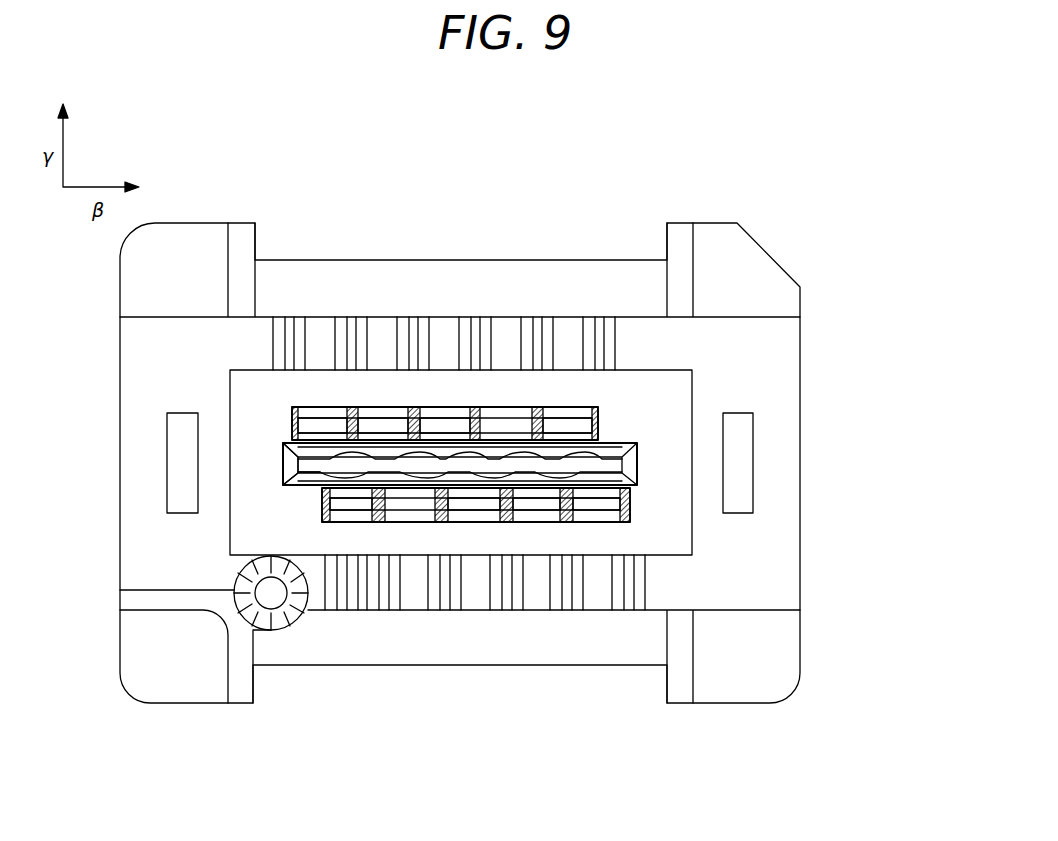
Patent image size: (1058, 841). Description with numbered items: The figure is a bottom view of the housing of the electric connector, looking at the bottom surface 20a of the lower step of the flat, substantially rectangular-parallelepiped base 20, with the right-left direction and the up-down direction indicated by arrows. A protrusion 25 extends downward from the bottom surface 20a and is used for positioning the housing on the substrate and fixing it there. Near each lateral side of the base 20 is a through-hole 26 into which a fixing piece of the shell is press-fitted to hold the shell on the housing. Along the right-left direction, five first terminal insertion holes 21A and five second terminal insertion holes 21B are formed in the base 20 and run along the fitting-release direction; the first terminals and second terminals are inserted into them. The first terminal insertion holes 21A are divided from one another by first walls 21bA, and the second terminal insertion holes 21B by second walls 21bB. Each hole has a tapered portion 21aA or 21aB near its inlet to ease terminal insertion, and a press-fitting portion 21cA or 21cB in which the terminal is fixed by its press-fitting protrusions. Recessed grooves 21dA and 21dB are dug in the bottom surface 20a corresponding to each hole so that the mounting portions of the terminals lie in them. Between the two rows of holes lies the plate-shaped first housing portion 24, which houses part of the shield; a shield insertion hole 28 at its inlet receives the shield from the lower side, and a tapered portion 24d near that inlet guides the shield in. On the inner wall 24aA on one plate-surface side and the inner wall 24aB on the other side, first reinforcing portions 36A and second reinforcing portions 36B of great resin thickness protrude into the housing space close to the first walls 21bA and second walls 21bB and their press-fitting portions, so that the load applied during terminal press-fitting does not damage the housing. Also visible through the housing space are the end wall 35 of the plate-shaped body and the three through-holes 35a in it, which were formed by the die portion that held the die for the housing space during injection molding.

The base 20 is at (782, 246).
The bottom surface 20a is at (777, 526).
The first terminal insertion holes 21A is at (373, 503).
The second terminal insertion holes 21B is at (583, 427).
The tapered portion 21aA is at (347, 467).
The tapered portion 21aB is at (572, 422).
The first walls 21bA is at (523, 500).
The second walls 21bB is at (398, 414).
The press-fitting portion 21cA is at (496, 500).
The press-fitting portion 21cB is at (308, 424).
The recessed groove 21dA is at (430, 556).
The recessed groove 21dB is at (515, 335).
The first housing portion 24 is at (433, 457).
The inner wall 24aA is at (418, 482).
The inner wall 24aB is at (637, 458).
The tapered portion 24d is at (310, 463).
The protrusion 25 is at (265, 631).
The through-holes 26 is at (180, 445).
The shield insertion hole 28 is at (288, 591).
The end wall 35 is at (385, 457).
The through-holes 35a is at (303, 487).
The first reinforcing portions 36A is at (540, 500).
The second reinforcing portions 36B is at (600, 430).